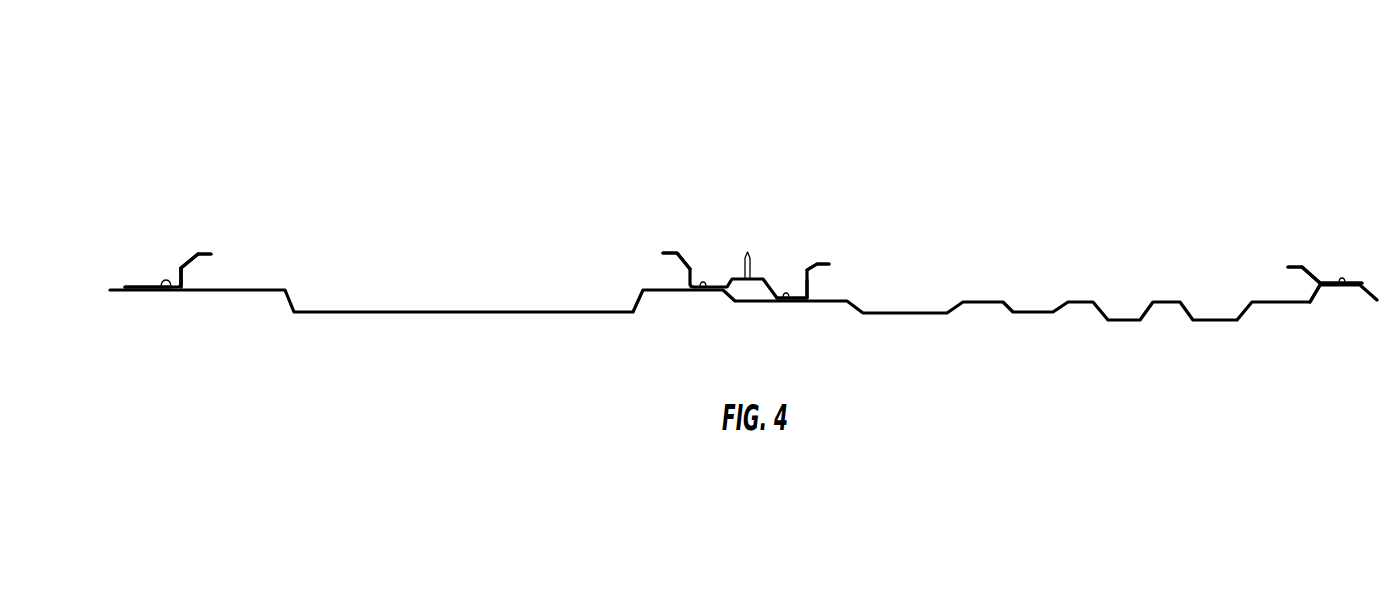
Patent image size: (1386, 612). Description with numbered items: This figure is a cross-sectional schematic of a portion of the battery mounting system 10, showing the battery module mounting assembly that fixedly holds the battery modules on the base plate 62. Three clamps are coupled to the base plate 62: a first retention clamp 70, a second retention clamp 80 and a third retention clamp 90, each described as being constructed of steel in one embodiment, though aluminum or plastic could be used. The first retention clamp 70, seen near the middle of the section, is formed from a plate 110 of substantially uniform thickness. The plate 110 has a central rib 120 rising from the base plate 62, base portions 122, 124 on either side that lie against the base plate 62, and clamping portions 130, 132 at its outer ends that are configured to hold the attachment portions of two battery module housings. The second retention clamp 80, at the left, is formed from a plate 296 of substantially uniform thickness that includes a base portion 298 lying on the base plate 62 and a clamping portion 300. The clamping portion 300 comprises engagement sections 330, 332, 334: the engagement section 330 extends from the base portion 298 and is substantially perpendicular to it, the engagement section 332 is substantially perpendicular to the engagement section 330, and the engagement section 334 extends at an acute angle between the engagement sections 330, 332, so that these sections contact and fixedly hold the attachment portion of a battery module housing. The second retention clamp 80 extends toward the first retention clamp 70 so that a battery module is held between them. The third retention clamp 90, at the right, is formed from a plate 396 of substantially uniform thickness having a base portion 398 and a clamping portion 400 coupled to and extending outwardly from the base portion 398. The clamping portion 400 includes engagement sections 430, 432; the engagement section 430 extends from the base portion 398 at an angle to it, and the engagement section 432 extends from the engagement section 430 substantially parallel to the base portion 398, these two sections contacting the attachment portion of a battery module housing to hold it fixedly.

The assembly 10 is at (822, 106).
The base plate 62 is at (370, 311).
The first retention clamp 70 is at (775, 270).
The second retention clamp 80 is at (184, 250).
The third retention clamp 90 is at (1300, 250).
The plate 110 is at (800, 300).
The central rib 120 is at (746, 276).
The base portion 122 is at (703, 289).
The base portion 124 is at (786, 299).
The clamping portion 130 is at (688, 265).
The clamping portion 132 is at (816, 264).
The plate 296 is at (168, 291).
The base portion 298 is at (143, 286).
The clamping portion 300 is at (180, 270).
The engagement section 330 is at (186, 280).
The engagement section 332 is at (206, 252).
The engagement section 334 is at (209, 262).
The plate 396 is at (1340, 289).
The base portion 398 is at (1357, 283).
The clamping portion 400 is at (1313, 291).
The engagement section 430 is at (1312, 281).
The engagement section 432 is at (1289, 270).